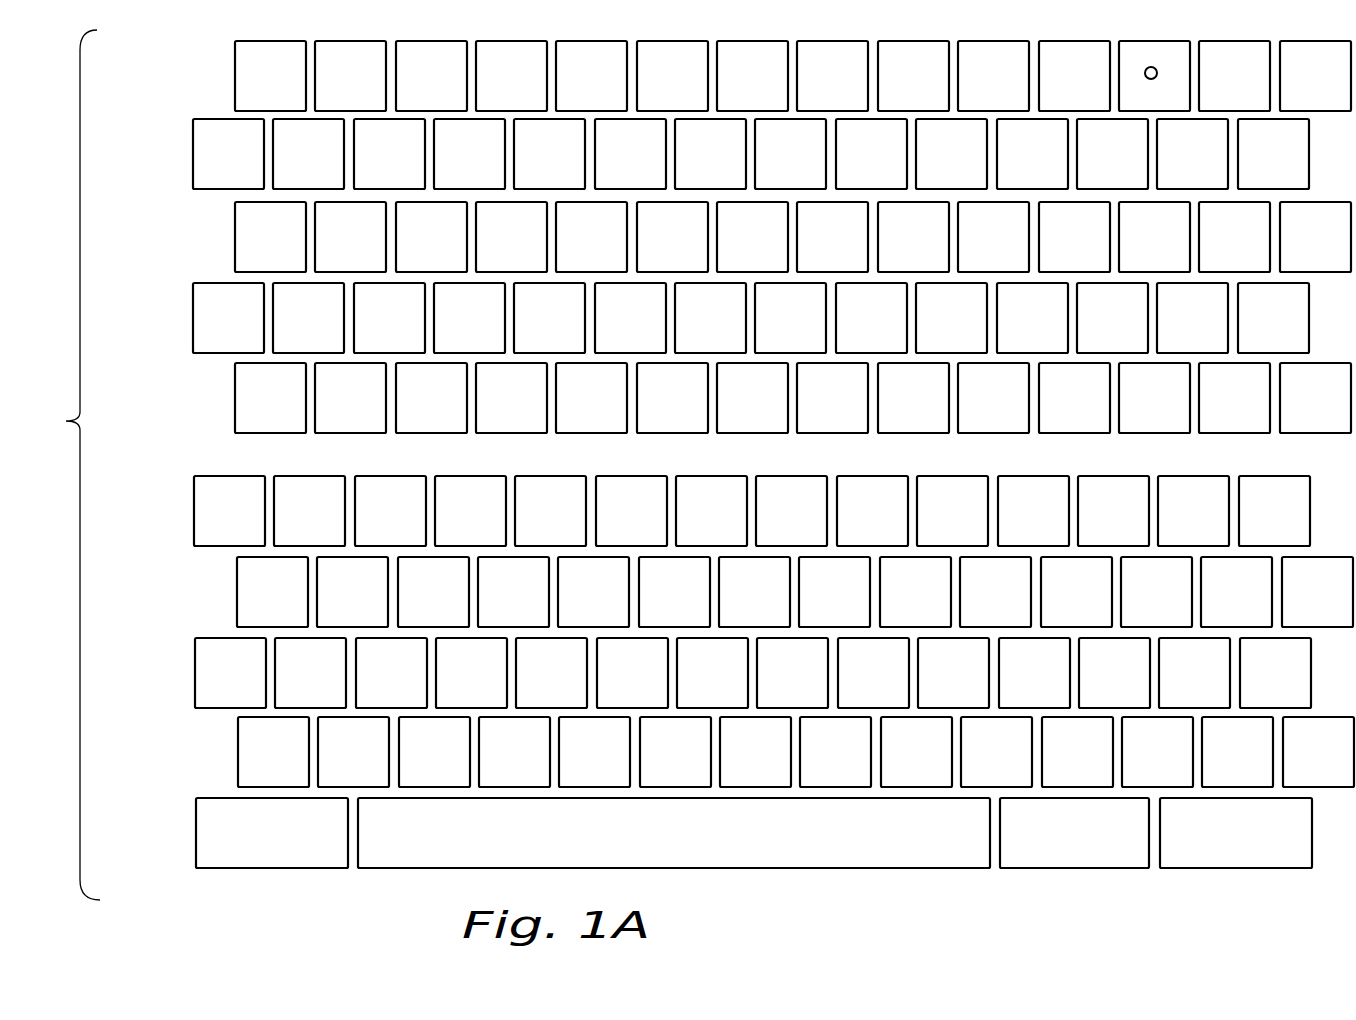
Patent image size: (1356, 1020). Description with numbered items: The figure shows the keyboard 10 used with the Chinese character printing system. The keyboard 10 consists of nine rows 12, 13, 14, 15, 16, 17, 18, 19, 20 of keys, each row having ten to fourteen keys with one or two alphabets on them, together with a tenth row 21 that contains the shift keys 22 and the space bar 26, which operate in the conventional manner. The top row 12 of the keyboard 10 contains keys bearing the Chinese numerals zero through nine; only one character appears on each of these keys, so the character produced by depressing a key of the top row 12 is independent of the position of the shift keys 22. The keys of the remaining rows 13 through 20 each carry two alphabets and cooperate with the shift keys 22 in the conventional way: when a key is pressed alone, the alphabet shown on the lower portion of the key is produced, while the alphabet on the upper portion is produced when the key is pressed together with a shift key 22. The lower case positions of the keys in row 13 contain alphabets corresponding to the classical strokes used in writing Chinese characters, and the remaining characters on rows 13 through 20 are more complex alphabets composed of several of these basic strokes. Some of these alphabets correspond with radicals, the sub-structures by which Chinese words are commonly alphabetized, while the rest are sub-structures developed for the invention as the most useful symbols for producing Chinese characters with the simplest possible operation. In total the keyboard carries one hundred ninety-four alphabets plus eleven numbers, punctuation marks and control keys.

The keyboard 10 is at (66, 421).
The top row 12 is at (197, 68).
The row of keys 13 is at (172, 157).
The row of keys 14 is at (210, 230).
The row of keys 15 is at (188, 318).
The row of keys 16 is at (217, 395).
The row of keys 17 is at (192, 504).
The row of keys 18 is at (215, 597).
The row of keys 19 is at (192, 680).
The row of keys 20 is at (223, 748).
The tenth row 21 is at (192, 838).
The shift keys 22 is at (212, 857).
The space bar 26 is at (797, 858).